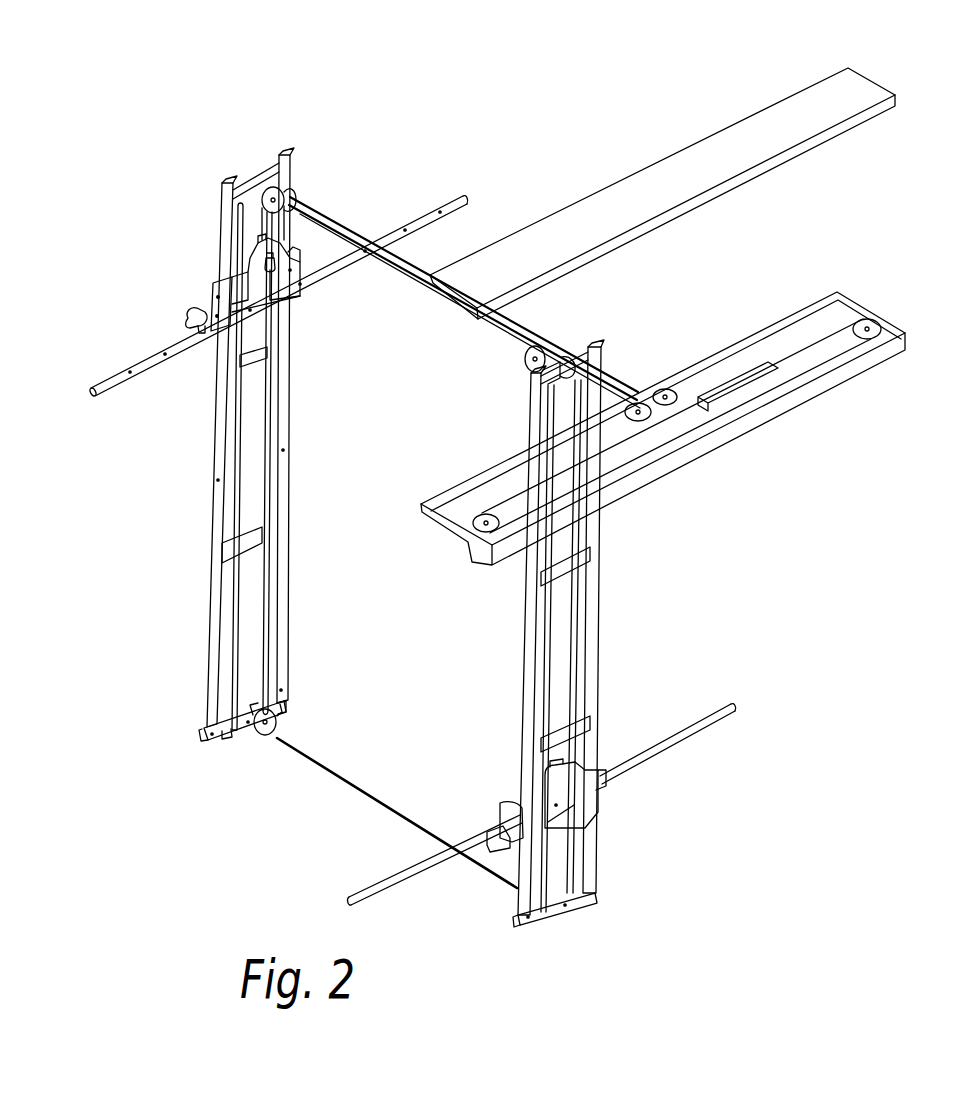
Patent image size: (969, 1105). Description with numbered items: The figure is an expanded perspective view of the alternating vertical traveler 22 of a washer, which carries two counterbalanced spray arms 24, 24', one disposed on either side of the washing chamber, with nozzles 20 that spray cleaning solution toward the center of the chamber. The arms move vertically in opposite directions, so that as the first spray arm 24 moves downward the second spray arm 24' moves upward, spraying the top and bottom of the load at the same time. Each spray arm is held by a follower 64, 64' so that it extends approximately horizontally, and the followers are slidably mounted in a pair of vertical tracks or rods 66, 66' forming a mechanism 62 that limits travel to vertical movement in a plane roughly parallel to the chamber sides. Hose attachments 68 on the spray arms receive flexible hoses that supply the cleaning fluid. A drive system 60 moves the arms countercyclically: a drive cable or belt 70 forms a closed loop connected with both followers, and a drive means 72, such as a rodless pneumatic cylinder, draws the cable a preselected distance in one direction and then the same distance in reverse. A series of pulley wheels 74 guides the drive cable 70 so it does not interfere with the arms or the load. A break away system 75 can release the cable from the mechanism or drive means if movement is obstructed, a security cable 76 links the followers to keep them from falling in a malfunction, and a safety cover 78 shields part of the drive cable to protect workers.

The nozzles 20 is at (157, 375).
The alternating vertical traveler 22 is at (215, 130).
The first spray arm 24 is at (275, 296).
The second spray arm 24' is at (550, 805).
The drive system 60 is at (765, 440).
The mechanism for supporting the spray arms 62 is at (200, 250).
The first follower 64 is at (200, 279).
The second follower 64' is at (590, 805).
The vertical track or rod 66 is at (183, 466).
The vertical track or rod 66' is at (313, 463).
The hose attachments 68 is at (185, 318).
The drive cable or belt 70 is at (340, 212).
The drive means 72 is at (763, 395).
The pulley wheels 74 is at (640, 410).
The break away system 75 is at (283, 277).
The security cable 76 is at (415, 290).
The safety cover 78 is at (833, 108).